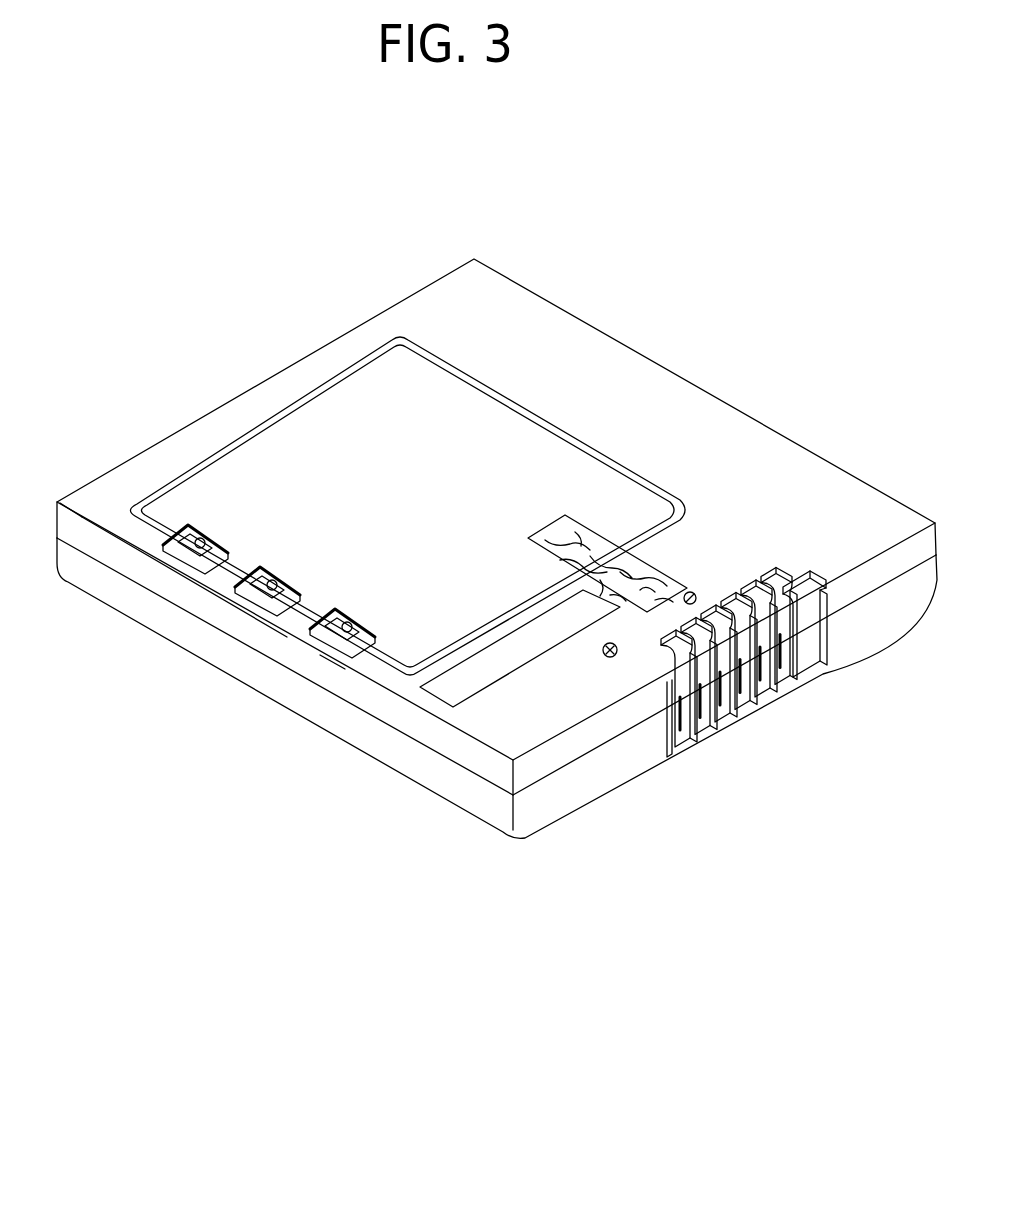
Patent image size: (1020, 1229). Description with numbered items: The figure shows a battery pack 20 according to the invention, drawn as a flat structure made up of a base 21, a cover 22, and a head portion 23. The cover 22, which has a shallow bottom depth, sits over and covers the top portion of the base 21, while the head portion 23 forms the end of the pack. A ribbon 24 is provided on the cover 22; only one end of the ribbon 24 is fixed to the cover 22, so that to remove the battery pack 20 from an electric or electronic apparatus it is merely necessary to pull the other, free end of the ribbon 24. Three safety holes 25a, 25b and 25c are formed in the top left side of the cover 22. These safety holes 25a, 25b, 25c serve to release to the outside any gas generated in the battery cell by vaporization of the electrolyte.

The battery pack 20 is at (356, 818).
The base 21 is at (553, 808).
The cover 22 is at (493, 298).
The head portion 23 is at (771, 756).
The ribbon 24 is at (548, 519).
The safety hole 25a is at (208, 538).
The safety hole 25b is at (282, 578).
The safety hole 25c is at (356, 618).